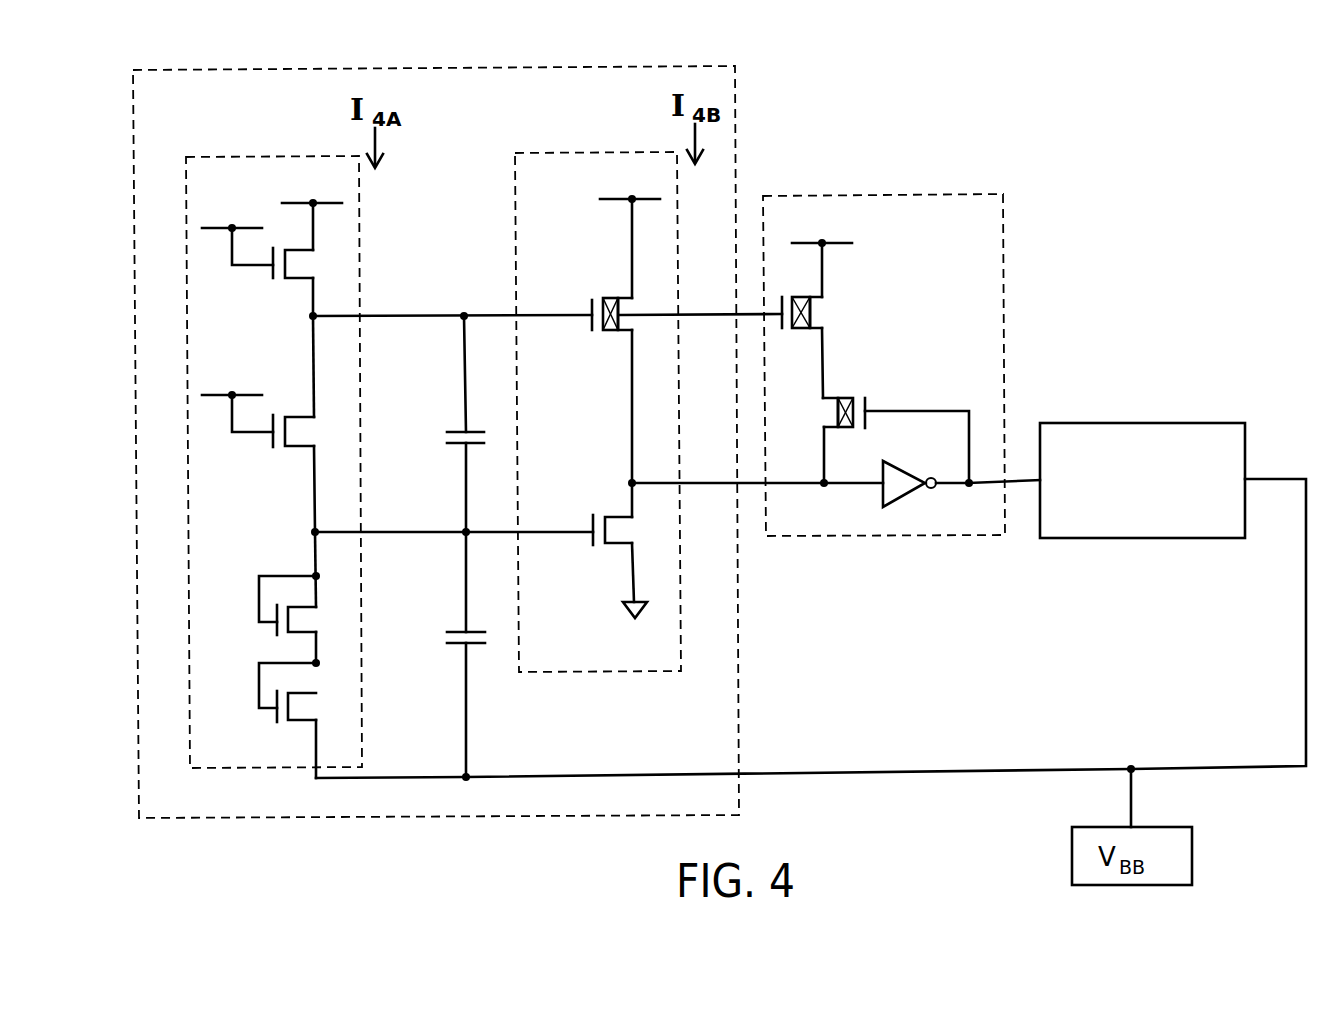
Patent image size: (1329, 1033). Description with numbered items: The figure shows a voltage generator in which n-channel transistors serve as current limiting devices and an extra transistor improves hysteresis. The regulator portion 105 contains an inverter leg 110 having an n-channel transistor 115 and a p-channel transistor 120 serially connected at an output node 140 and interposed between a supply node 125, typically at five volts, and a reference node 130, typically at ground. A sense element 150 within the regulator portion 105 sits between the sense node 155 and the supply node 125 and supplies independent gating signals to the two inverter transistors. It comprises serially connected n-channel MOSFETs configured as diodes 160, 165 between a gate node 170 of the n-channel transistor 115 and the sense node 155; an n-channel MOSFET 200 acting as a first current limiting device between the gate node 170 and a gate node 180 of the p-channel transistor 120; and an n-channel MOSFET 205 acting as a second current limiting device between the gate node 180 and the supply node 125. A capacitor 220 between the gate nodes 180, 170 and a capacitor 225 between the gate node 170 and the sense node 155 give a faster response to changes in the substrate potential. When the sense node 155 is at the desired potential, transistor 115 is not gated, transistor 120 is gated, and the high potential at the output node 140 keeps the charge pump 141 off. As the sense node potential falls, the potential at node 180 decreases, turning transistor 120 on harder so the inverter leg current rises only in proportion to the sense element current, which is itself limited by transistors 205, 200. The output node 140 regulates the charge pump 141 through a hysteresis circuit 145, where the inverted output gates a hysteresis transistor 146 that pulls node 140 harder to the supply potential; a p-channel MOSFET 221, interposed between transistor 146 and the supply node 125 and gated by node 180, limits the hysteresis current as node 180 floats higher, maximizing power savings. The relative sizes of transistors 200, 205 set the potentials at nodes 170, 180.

The regulator portion 105 is at (436, 66).
The sense element 150 is at (240, 154).
The inverter leg 110 is at (557, 149).
The hysteresis circuit 145 is at (944, 188).
The supply node 125 is at (313, 203).
The n-channel MOSFET 205 is at (293, 272).
The gate node 180 is at (313, 318).
The n-channel MOSFET 200 is at (293, 440).
The gate node 170 is at (315, 532).
The n-channel MOSFET configured as diode 160 is at (300, 628).
The n-channel MOSFET configured as diode 165 is at (300, 715).
The capacitor 220 is at (454, 437).
The capacitor 225 is at (454, 637).
The p-channel transistor 120 is at (611, 296).
The output node 140 is at (632, 483).
The n-channel transistor 115 is at (611, 552).
The reference node 130 is at (628, 612).
The p-channel MOSFET 221 is at (813, 313).
The hysteresis transistor 146 is at (853, 398).
The charge pump 141 is at (1158, 495).
The sense node 155 is at (1133, 767).